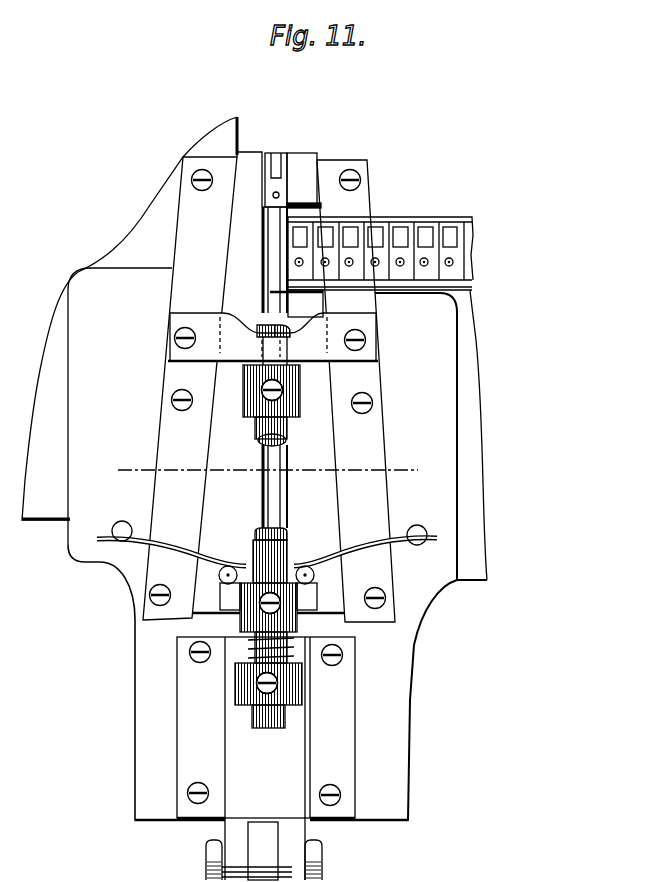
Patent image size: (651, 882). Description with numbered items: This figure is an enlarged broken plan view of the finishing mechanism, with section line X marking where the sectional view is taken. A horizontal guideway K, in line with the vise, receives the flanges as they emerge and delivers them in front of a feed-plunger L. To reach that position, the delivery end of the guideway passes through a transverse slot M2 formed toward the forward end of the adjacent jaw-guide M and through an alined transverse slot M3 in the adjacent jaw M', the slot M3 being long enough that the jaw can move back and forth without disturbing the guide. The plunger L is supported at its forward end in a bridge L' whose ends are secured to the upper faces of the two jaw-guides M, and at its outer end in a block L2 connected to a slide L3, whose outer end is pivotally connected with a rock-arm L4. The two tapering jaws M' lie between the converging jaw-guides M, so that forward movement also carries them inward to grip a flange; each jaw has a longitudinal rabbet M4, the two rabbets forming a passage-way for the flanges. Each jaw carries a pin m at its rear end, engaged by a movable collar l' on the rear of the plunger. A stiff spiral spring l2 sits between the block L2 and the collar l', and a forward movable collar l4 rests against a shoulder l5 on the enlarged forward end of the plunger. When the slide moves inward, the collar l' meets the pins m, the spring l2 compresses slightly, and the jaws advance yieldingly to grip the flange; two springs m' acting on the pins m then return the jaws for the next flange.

The jaw-guides M is at (269, 389).
The jaws M' is at (280, 151).
The transverse slot M2 is at (372, 213).
The transverse slot M3 is at (313, 207).
The longitudinal rabbet M4 is at (265, 262).
The horizontal guideway K is at (472, 290).
The feed-plunger L is at (281, 317).
The bridge L' is at (273, 337).
The block L2 is at (238, 692).
The slide L3 is at (266, 758).
The rock-arm L4 is at (264, 851).
The movable block or collar l' is at (269, 582).
The stiff spiral spring l2 is at (253, 649).
The movable collar l4 is at (300, 391).
The shoulder l5 is at (292, 366).
The pin m is at (267, 577).
The springs m' is at (267, 543).
The section line X is at (266, 471).